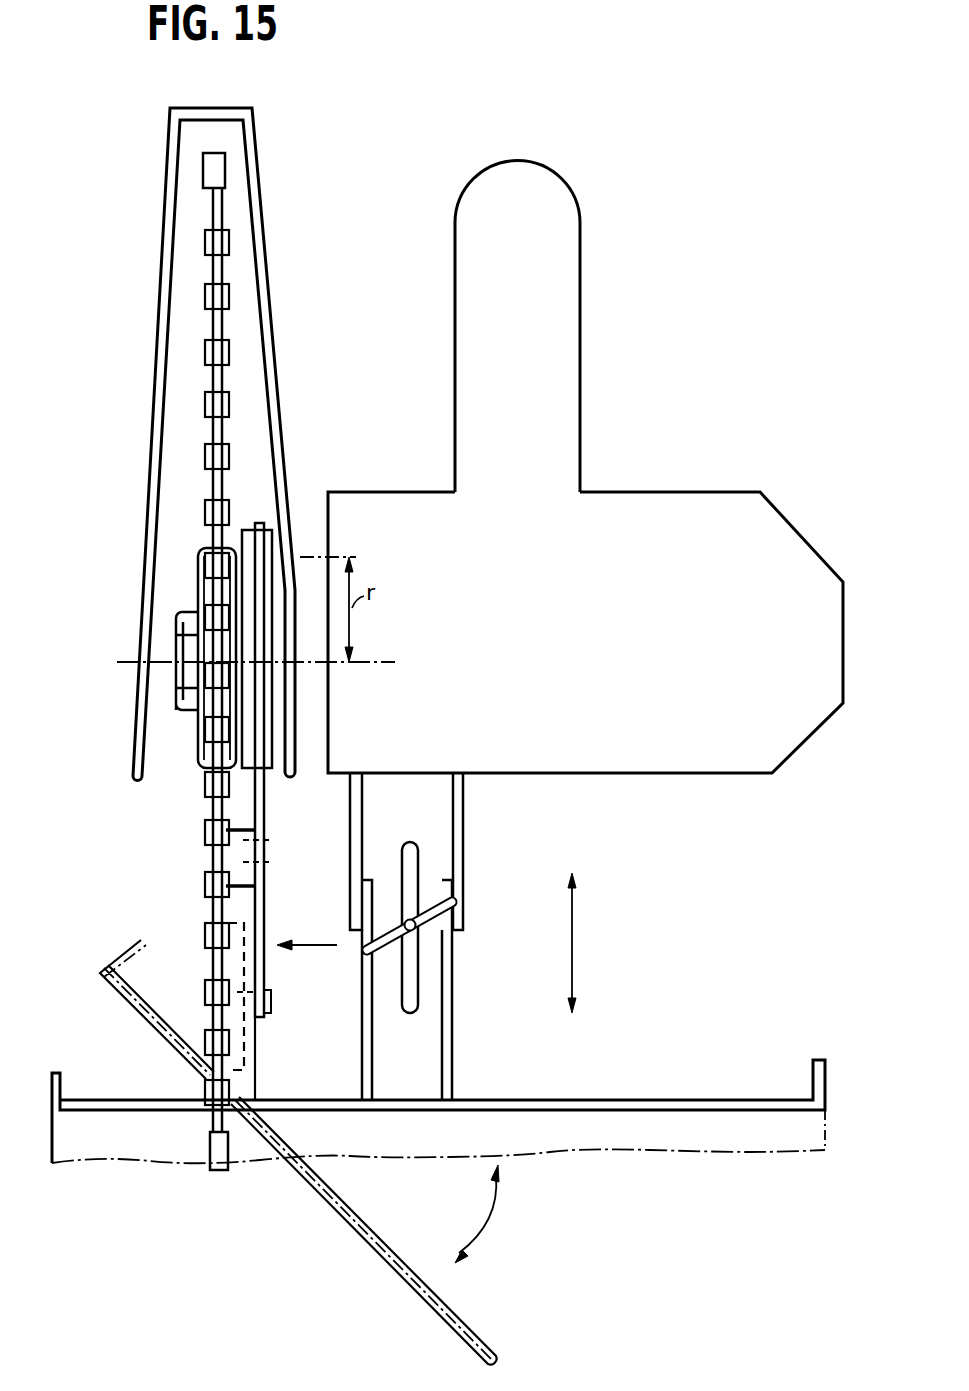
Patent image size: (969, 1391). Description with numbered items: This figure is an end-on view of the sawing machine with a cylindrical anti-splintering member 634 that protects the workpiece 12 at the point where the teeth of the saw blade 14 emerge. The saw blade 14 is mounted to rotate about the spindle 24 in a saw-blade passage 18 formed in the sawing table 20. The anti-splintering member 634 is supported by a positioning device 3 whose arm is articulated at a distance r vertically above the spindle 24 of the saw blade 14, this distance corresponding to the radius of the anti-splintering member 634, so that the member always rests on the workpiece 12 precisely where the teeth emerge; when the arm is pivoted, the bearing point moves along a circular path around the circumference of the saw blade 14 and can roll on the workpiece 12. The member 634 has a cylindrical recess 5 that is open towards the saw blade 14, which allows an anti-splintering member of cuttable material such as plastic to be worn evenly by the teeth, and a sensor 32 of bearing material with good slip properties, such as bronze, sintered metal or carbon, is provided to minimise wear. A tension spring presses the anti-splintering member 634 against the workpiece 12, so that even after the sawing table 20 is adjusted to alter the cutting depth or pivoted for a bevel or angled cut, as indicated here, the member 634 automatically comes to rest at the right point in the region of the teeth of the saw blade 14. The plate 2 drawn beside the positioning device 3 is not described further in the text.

The plate 2 is at (275, 548).
The positioning device 3 is at (264, 803).
The cylindrical recess 5 is at (228, 937).
The workpiece 12 is at (820, 1145).
The saw blade 14 is at (213, 323).
The saw-blade passage 18 is at (257, 218).
The sawing table 20 is at (822, 1070).
The spindle 24 is at (370, 660).
The sensor 32 is at (232, 852).
The cylindrical anti-splintering member 634 is at (246, 1087).